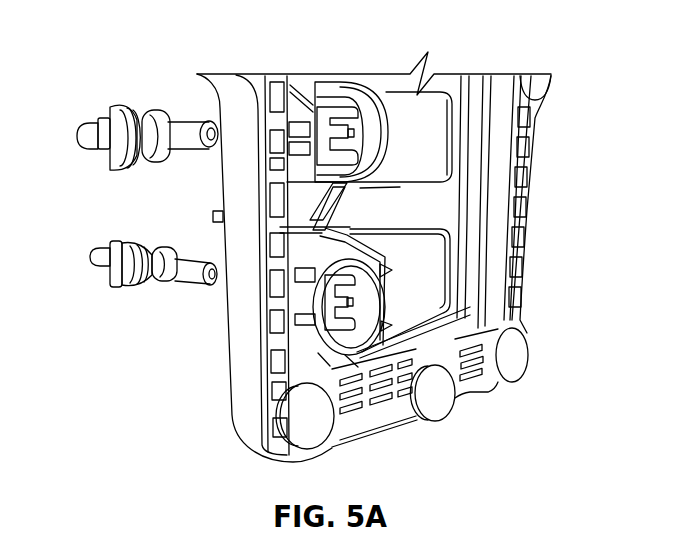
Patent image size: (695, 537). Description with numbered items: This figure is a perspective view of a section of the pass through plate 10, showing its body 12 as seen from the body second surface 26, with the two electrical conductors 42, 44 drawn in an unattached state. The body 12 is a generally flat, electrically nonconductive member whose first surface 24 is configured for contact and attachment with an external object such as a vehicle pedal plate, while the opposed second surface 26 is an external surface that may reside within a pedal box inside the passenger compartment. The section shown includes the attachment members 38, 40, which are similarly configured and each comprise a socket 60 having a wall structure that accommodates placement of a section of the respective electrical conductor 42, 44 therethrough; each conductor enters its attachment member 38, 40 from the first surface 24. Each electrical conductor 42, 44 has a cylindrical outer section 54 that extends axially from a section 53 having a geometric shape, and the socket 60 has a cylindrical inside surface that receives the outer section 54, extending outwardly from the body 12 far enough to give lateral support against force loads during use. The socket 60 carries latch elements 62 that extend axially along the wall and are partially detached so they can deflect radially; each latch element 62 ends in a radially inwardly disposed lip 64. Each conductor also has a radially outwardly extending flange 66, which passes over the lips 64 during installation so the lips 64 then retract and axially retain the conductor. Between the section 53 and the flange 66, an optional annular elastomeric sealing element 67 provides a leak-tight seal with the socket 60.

The pass through plate 10 is at (588, 78).
The body 12 is at (242, 400).
The first surface 24 is at (195, 74).
The second surface 26 is at (370, 400).
The attachment member 38 is at (302, 328).
The attachment member 40 is at (303, 158).
The electrical conductor 42 is at (116, 290).
The electrical conductor 44 is at (100, 155).
The section having the geometric shape 53 is at (107, 115).
The cylindrical outer section 54 is at (118, 108).
The socket 60 is at (325, 100).
The latch element 62 is at (338, 128).
The lip 64 is at (355, 132).
The flange 66 is at (160, 114).
The sealing element 67 is at (110, 113).